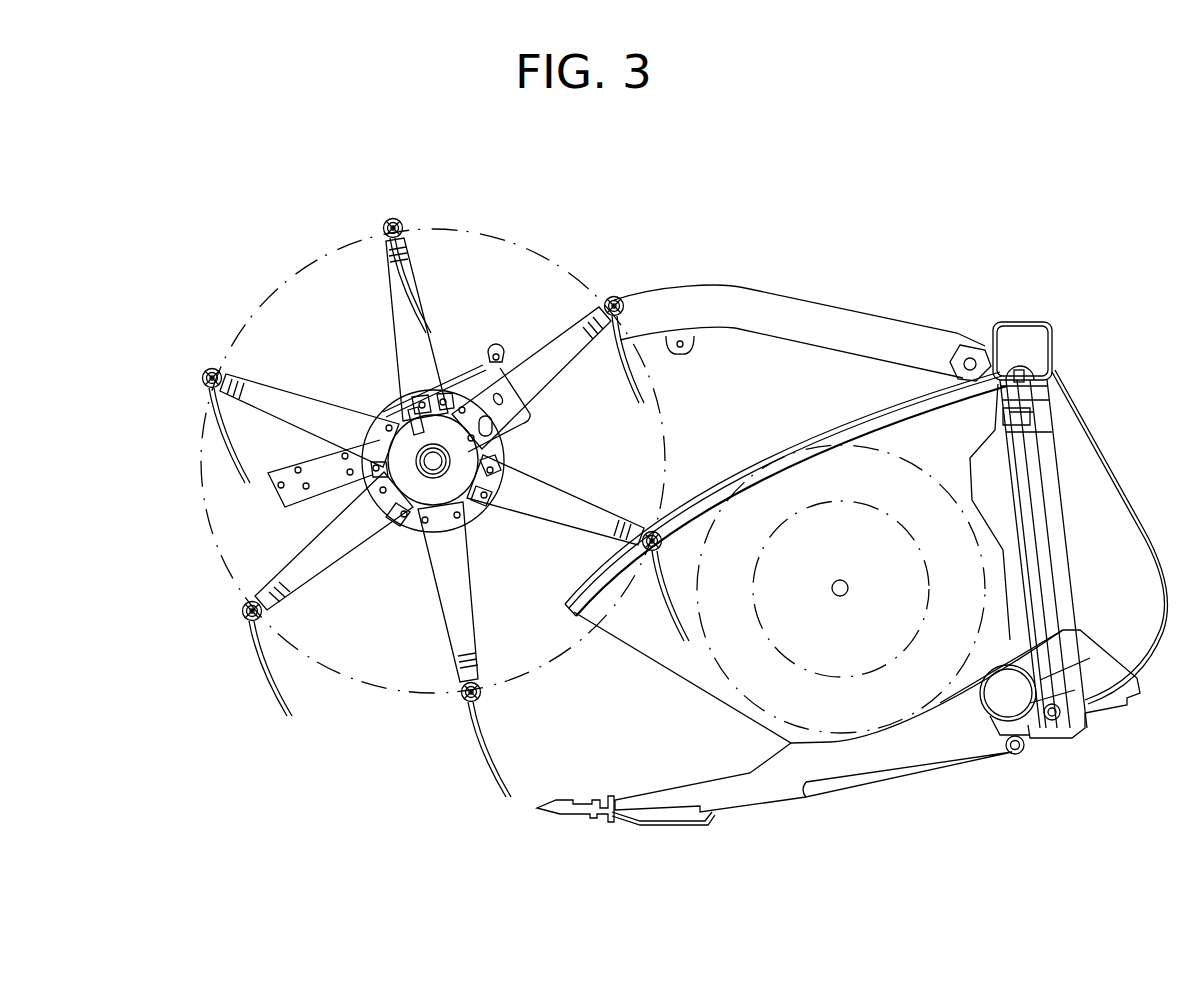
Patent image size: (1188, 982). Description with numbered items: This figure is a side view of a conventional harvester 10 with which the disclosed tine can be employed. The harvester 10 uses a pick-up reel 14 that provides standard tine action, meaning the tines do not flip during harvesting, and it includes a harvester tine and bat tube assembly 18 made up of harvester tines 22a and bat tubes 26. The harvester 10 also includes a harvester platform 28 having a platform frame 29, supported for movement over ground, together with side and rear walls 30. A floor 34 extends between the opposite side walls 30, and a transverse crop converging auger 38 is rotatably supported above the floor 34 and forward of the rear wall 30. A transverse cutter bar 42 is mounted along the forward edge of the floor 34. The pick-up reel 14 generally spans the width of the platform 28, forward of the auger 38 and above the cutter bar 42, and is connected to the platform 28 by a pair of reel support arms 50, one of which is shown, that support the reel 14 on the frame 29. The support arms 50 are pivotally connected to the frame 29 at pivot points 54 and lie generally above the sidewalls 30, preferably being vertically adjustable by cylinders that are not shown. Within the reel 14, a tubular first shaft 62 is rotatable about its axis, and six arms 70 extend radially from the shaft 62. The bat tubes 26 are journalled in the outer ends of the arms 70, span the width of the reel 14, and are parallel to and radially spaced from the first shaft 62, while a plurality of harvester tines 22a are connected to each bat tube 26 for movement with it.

The harvester 10 is at (828, 276).
The pick-up reel 14 is at (536, 226).
The harvester tine and bat tube assembly 18 is at (396, 216).
The harvester tine 22a is at (412, 306).
The bat tube 26 is at (387, 237).
The harvester platform 28 is at (1112, 470).
The platform frame 29 is at (1053, 553).
The side and rear wall 30 is at (857, 604).
The floor 34 is at (921, 720).
The transverse crop converging auger 38 is at (893, 447).
The transverse cutter bar 42 is at (548, 814).
The reel support arm 50 is at (878, 325).
The pivot point 54 is at (970, 356).
The first shaft 62 is at (437, 535).
The arm 70 is at (427, 355).